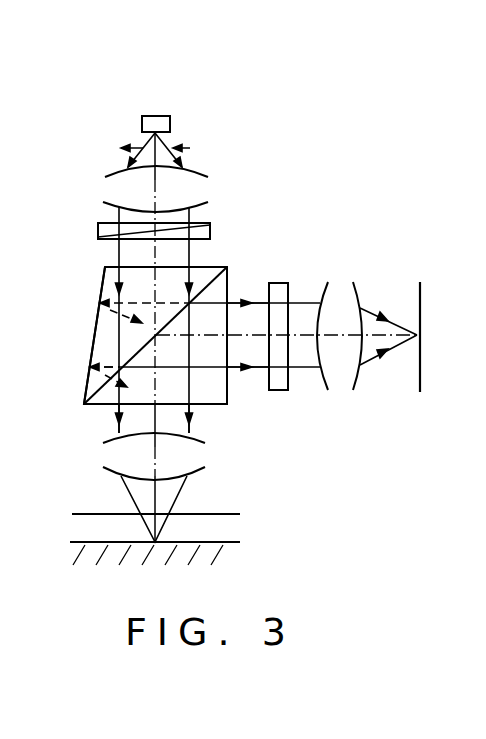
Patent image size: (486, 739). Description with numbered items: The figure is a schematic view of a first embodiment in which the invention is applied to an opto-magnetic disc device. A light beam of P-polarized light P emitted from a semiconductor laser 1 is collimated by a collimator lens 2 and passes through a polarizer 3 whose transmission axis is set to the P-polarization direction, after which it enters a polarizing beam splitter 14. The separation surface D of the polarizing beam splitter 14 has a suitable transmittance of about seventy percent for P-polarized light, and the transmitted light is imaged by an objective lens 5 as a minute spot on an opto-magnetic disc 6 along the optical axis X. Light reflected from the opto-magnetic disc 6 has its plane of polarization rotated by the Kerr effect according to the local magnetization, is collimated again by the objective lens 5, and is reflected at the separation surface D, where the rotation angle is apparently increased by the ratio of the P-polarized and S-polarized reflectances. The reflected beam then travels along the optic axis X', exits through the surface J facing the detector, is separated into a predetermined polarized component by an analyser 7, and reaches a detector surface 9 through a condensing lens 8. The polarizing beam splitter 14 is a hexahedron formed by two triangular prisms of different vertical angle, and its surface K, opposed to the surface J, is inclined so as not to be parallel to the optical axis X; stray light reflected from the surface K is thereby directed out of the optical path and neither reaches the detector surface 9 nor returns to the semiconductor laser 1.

The semiconductor laser 1 is at (165, 124).
The P-polarized light P is at (180, 145).
The collimator lens 2 is at (190, 193).
The polarizer 3 is at (213, 226).
The polarizing beam splitter 14 is at (218, 293).
The surface of the polarizing beam splitter K is at (102, 285).
The separation surface D is at (90, 387).
The optical axis X is at (126, 423).
The optic axis of the reflected beam X' is at (262, 363).
The surface of the polarizing beam splitter J is at (227, 392).
The analyser 7 is at (282, 284).
The condensing lens 8 is at (338, 290).
The detector surface 9 is at (422, 288).
The objective lens 5 is at (197, 455).
The opto-magnetic disc 6 is at (225, 530).